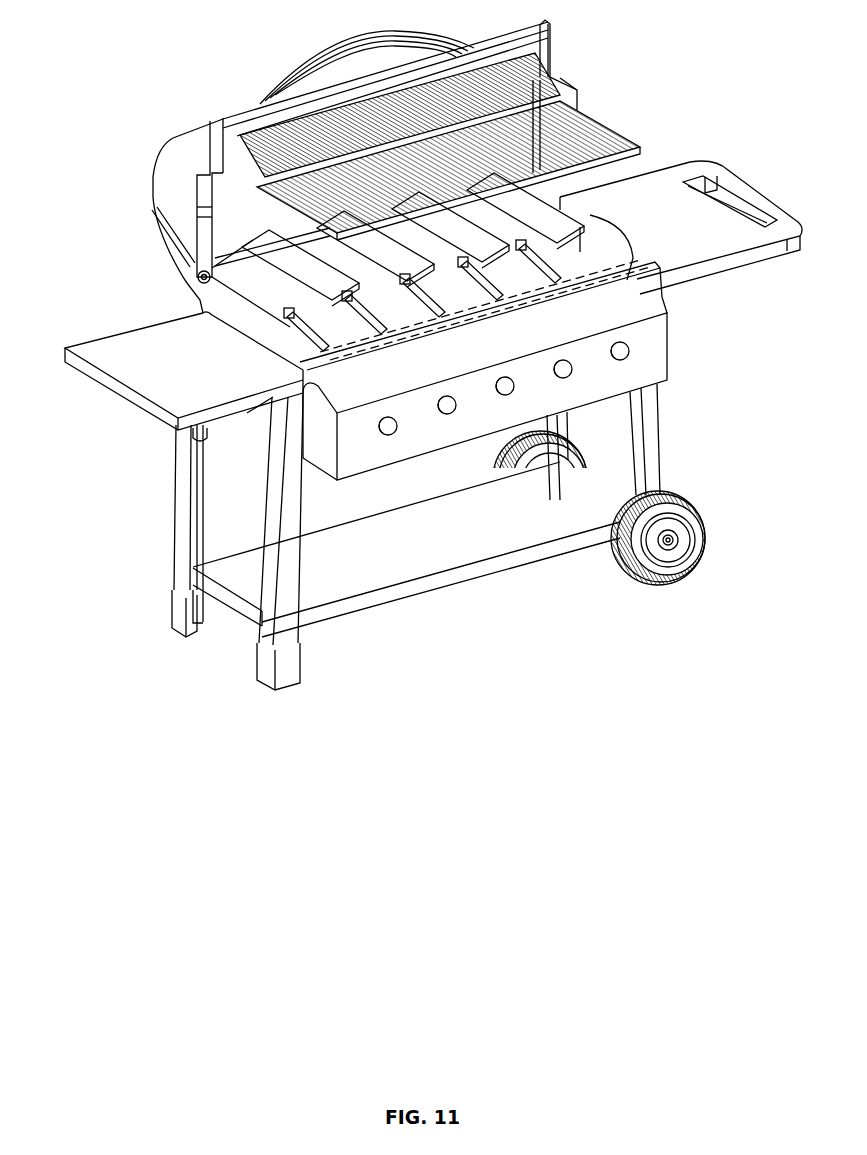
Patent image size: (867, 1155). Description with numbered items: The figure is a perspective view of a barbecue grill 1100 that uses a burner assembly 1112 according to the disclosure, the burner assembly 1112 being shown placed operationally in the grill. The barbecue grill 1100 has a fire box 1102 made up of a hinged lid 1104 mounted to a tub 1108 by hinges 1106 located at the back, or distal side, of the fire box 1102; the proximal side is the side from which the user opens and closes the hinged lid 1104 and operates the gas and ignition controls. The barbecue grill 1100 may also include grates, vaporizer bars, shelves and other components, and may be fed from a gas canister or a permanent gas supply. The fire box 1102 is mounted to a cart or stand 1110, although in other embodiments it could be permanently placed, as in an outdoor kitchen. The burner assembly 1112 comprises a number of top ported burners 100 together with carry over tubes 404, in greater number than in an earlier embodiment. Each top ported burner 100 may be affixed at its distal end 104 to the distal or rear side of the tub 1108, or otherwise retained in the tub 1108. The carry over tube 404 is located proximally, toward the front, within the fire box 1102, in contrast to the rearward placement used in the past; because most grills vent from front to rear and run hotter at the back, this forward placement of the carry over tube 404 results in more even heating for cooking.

The barbecue grill 1100 is at (133, 98).
The fire box 1102 is at (635, 122).
The hinged lid 1104 is at (177, 183).
The hinges 1106 is at (197, 277).
The tub 1108 is at (250, 329).
The cart or stand 1110 is at (555, 553).
The burner assembly 1112 is at (613, 303).
The distal end 104 is at (525, 246).
The top ported burner 100 is at (548, 315).
The carry over tube 404 is at (508, 321).